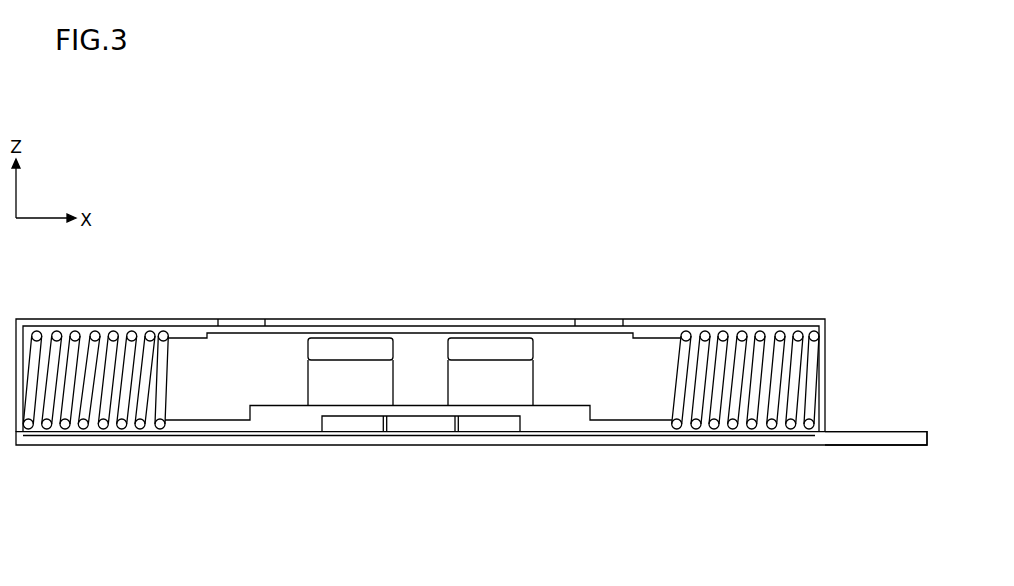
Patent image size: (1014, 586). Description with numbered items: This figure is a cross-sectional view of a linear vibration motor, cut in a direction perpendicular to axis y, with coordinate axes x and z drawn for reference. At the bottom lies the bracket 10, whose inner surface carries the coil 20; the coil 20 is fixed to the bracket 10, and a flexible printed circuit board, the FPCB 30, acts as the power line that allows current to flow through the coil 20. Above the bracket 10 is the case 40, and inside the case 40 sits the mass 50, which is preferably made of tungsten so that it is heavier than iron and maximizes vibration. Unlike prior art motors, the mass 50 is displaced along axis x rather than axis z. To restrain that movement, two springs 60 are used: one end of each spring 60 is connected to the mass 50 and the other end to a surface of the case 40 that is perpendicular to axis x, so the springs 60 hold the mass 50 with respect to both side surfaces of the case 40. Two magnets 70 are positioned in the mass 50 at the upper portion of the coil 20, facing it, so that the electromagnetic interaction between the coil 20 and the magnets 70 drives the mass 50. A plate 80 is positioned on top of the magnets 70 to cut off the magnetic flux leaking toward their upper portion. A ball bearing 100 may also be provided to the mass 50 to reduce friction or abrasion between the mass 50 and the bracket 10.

The bracket 10 is at (557, 445).
The coil 20 is at (358, 425).
The flexible printed circuit board (FPCB) 30 is at (876, 431).
The case 40 is at (180, 318).
The mass 50 is at (643, 353).
The spring 60 is at (95, 331).
The magnet 70 is at (485, 388).
The plate 80 is at (467, 347).
The ball bearing 100 is at (125, 427).